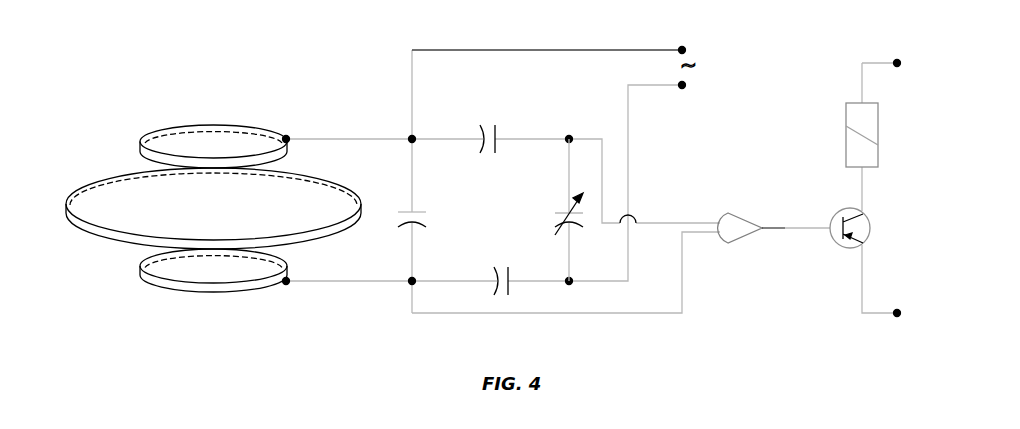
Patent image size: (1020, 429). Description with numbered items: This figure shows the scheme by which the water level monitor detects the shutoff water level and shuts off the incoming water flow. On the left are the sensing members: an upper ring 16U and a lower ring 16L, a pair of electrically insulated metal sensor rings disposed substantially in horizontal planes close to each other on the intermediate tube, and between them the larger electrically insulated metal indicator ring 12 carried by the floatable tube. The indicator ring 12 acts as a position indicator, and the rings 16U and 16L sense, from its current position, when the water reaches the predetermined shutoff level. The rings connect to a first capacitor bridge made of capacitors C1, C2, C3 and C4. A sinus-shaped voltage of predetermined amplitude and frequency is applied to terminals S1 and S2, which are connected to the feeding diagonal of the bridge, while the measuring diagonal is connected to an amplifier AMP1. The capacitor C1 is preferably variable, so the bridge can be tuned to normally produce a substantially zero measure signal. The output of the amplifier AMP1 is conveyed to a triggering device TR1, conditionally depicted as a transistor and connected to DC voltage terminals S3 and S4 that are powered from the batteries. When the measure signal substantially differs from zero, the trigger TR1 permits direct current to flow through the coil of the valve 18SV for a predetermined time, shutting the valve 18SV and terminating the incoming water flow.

The indicator ring 12 is at (130, 247).
The upper ring 16U is at (187, 123).
The lower ring 16L is at (197, 293).
The capacitor C1 is at (555, 210).
The capacitor C2 is at (489, 124).
The capacitor C3 is at (503, 268).
The capacitor C4 is at (429, 215).
The terminal S1 is at (696, 44).
The terminal S2 is at (696, 86).
The DC voltage terminal S3 is at (899, 313).
The DC voltage terminal S4 is at (898, 58).
The amplifier AMP1 is at (746, 214).
The triggering device TR1 is at (847, 239).
The valve 18SV is at (846, 140).